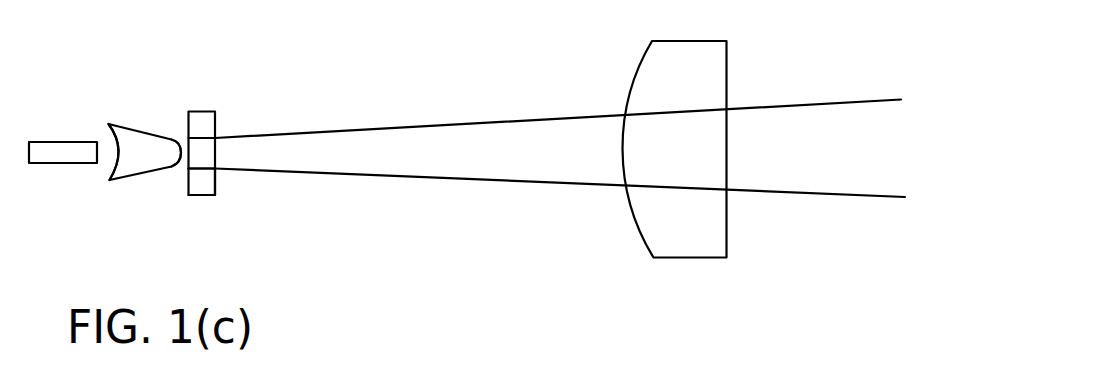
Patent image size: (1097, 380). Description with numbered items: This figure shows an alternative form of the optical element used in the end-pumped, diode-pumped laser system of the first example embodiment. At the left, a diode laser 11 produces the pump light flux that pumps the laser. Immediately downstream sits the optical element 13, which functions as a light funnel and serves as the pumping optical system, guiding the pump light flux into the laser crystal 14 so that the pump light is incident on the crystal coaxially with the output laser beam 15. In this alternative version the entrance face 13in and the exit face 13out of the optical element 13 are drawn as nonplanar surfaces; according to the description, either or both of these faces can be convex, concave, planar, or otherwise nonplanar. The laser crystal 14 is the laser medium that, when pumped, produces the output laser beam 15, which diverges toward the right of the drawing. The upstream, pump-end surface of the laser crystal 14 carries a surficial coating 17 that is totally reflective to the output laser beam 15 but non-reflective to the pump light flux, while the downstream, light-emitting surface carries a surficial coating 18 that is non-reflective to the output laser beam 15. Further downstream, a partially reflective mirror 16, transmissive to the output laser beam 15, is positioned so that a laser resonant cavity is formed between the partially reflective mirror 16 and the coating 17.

The diode laser 11 is at (62, 142).
The optical element 13 is at (140, 133).
The exit face 13out is at (183, 143).
The entrance face 13in is at (120, 165).
The laser crystal 14 is at (202, 112).
The output laser beam 15 is at (442, 148).
The partially reflective mirror 16 is at (688, 258).
The surficial coating 17 is at (187, 181).
The surficial coating 18 is at (217, 181).